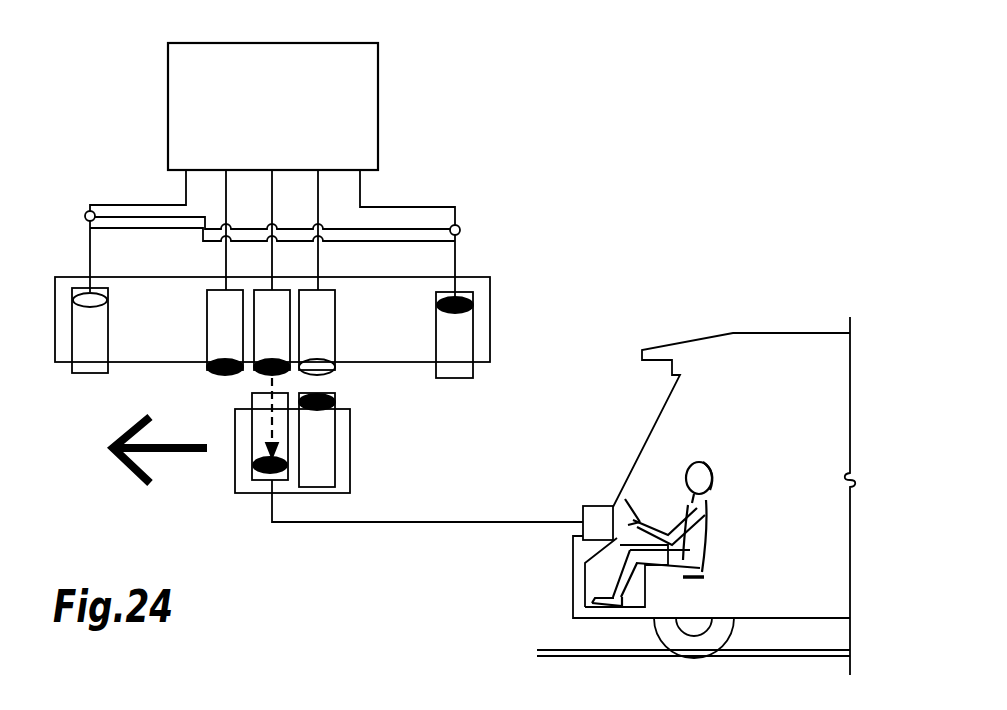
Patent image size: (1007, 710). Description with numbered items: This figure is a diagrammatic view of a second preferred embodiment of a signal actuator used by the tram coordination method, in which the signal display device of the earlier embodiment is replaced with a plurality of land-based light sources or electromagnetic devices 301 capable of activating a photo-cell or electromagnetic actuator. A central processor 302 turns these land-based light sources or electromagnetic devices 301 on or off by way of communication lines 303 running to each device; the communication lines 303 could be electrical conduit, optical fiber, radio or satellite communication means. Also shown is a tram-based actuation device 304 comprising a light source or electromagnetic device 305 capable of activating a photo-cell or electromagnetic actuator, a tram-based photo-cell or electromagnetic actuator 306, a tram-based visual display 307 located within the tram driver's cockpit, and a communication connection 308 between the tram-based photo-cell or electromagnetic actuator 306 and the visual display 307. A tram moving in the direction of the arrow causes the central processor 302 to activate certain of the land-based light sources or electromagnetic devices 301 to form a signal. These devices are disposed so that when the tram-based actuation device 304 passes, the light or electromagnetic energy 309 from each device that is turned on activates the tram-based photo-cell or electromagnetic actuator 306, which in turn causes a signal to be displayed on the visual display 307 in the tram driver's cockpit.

The land-based light sources or electromagnetic devices 301 is at (222, 360).
The central processor 302 is at (173, 80).
The communication lines 303 is at (320, 208).
The tram-based actuation device 304 is at (352, 475).
The light source or electromagnetic device 305 is at (333, 408).
The tram-based photo-cell or electromagnetic actuator 306 is at (257, 472).
The tram-based visual display 307 is at (598, 505).
The communication connection 308 is at (470, 525).
The light or electromagnetic energy from each electromagnetic device 309 is at (265, 408).